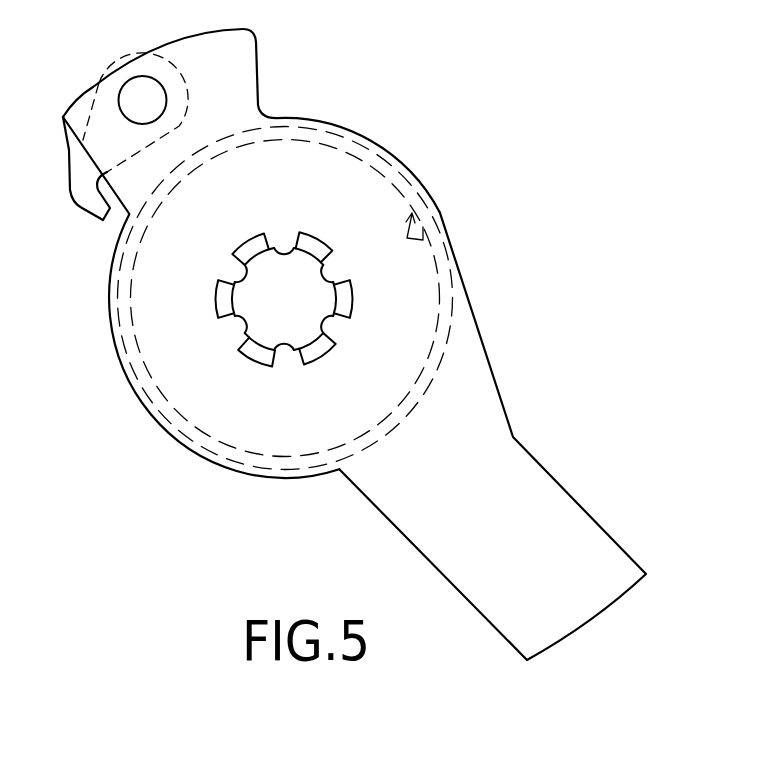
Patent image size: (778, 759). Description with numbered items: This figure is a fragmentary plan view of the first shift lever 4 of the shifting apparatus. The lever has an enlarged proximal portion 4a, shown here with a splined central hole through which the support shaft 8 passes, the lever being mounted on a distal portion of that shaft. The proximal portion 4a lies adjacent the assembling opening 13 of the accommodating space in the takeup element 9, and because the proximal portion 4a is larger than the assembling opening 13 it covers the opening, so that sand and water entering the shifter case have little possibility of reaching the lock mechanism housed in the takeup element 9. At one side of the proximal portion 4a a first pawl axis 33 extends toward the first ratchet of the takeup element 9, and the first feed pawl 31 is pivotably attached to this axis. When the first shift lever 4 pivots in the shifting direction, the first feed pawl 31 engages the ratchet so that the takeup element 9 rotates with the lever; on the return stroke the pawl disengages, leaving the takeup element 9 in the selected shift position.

The first shift lever 4 is at (565, 497).
The proximal portion of the first shift lever 4a is at (387, 498).
The support shaft 8 is at (277, 324).
The takeup element 9 is at (452, 323).
The assembling opening 13 is at (423, 229).
The first feed pawl 31 is at (82, 210).
The first pawl axis 33 is at (157, 108).